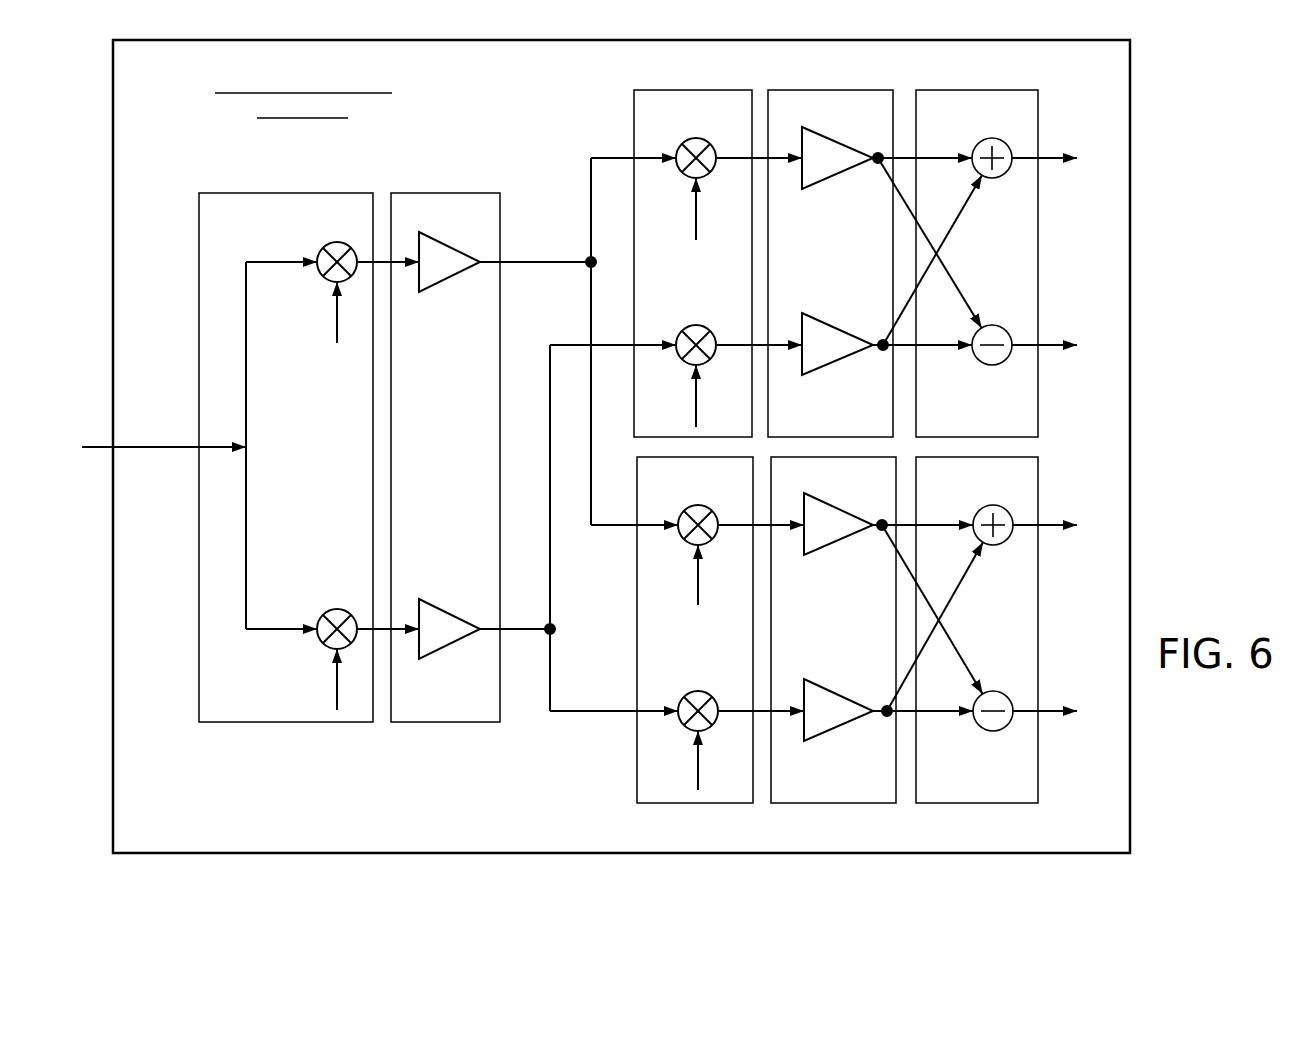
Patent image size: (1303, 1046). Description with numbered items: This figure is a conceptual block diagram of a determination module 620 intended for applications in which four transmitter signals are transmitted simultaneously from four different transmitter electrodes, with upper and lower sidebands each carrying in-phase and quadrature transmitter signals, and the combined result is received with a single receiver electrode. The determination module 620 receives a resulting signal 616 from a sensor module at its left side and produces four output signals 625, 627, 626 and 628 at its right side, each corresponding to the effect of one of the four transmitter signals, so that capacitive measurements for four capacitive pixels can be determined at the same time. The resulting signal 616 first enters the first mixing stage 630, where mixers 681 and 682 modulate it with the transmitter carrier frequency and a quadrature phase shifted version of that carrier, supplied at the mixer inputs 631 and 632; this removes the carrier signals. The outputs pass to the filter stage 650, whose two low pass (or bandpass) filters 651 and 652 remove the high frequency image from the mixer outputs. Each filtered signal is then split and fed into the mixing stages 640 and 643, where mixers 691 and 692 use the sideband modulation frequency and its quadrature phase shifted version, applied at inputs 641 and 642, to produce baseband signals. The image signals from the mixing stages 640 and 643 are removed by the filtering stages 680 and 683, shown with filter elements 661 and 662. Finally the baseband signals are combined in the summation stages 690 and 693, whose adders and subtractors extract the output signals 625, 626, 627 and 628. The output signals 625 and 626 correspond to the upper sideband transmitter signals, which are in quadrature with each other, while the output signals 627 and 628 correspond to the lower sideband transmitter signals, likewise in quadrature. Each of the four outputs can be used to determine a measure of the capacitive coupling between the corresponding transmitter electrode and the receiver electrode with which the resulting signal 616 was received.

The resulting signal 616 is at (150, 445).
The determination module 620 is at (1131, 273).
The first mixing stage 630 is at (320, 193).
The first multiplier input 631 is at (337, 329).
The second multiplier input 632 is at (337, 696).
The mixing stage 640 is at (702, 72).
The multiplier input signal 641 is at (697, 222).
The multiplier input signal 642 is at (696, 410).
The mixing stage 643 is at (703, 803).
The filter stage 650 is at (458, 176).
The low pass filter 651 is at (459, 226).
The low pass filter 652 is at (460, 594).
The amplifier 661 is at (845, 123).
The amplifier 662 is at (850, 311).
The filtering stage 680 is at (840, 72).
The mixer 681 is at (330, 244).
The mixer 682 is at (330, 610).
The filtering stage 683 is at (843, 803).
The summation stage 690 is at (1011, 72).
The mixer 691 is at (692, 140).
The mixer 692 is at (692, 326).
The summation stage 693 is at (1010, 803).
The output signal 625 is at (1078, 142).
The output signal 626 is at (1078, 502).
The output signal 627 is at (1072, 318).
The output signal 628 is at (1080, 695).